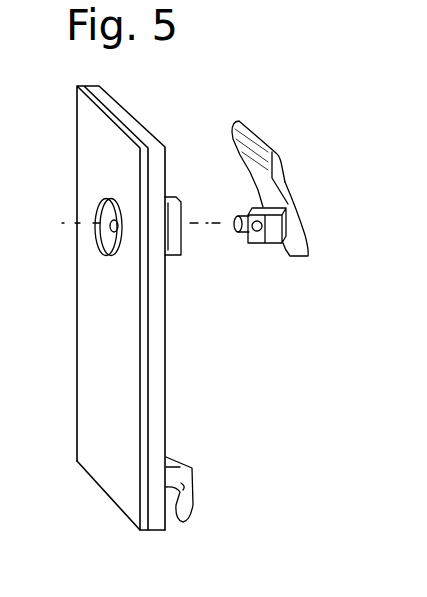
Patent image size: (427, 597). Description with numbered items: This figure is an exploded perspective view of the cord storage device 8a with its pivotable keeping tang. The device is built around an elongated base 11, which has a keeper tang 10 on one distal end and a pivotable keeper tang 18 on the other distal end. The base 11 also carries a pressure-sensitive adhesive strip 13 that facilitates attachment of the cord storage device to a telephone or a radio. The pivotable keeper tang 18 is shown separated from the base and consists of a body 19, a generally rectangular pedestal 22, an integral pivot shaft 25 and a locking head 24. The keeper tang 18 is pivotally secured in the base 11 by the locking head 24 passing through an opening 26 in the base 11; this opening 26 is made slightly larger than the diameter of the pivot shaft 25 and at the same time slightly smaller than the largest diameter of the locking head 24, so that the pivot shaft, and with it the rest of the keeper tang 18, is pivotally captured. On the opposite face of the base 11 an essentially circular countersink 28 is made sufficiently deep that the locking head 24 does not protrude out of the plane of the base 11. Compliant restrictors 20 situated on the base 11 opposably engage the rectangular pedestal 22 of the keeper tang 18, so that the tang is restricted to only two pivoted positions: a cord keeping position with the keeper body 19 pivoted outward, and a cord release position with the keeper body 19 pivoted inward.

The cord storage device 8a is at (275, 418).
The keeper tang 10 is at (192, 478).
The elongated base 11 is at (158, 432).
The pressure-sensitive adhesive strip 13 is at (140, 530).
The pivotable keeper tang 18 is at (293, 172).
The body 19 is at (310, 237).
The compliant restrictors 20 is at (180, 250).
The pedestal 22 is at (278, 243).
The locking head 24 is at (242, 233).
The integral pivot shaft 25 is at (250, 210).
The opening 26 is at (105, 222).
The countersink 28 is at (100, 238).